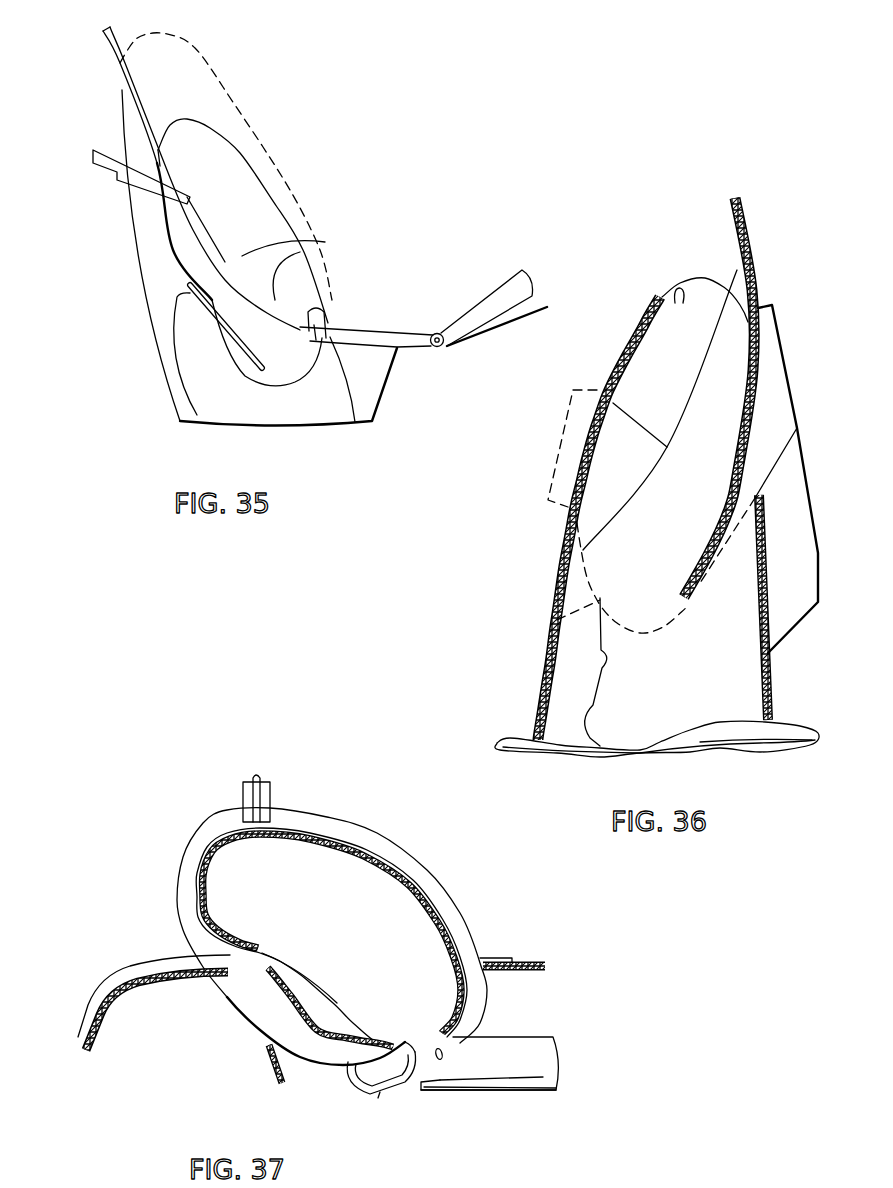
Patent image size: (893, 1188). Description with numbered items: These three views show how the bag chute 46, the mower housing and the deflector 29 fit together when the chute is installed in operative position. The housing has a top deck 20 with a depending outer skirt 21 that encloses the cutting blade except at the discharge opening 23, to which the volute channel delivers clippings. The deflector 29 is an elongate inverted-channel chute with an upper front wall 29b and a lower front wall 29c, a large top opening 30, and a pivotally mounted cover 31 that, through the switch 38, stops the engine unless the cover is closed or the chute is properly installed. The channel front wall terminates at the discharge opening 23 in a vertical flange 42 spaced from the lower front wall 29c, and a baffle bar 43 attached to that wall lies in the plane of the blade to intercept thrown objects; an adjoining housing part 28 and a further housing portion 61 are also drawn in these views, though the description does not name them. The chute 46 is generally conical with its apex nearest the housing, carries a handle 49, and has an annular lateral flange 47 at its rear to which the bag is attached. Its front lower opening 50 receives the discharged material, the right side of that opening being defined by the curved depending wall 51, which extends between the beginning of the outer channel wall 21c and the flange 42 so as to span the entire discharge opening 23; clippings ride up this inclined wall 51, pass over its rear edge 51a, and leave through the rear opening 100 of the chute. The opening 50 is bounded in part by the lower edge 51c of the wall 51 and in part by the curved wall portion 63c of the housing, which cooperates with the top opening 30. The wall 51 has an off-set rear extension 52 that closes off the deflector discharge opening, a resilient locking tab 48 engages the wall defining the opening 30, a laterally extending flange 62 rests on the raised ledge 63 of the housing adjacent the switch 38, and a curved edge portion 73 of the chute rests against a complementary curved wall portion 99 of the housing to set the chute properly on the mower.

In FIG. 37, the top deck 20 is at (548, 1036).
In FIG. 35, the outer skirt 21 is at (112, 60).
In FIG. 37, the outer skirt 21 is at (490, 1092).
In FIG. 35, the outer wall of the channel 21c is at (400, 335).
In FIG. 35, the discharge opening 23 is at (325, 242).
In FIG. 35, the hinge arm 28 is at (503, 322).
In FIG. 37, the hinge arm 28 is at (520, 1078).
In FIG. 35, the deflector 29 is at (158, 368).
In FIG. 36, the deflector 29 is at (820, 550).
In FIG. 37, the deflector 29 is at (142, 959).
In FIG. 37, the upper front wall 29b is at (90, 1010).
In FIG. 35, the lower front wall 29c is at (170, 253).
In FIG. 37, the lower front wall 29c is at (84, 1048).
In FIG. 36, the top opening 30 is at (560, 616).
In FIG. 35, the cover 31 is at (284, 376).
In FIG. 36, the switch 38 is at (569, 443).
In FIG. 35, the vertical outwardly extending flange 42 is at (163, 177).
In FIG. 35, the baffle bar 43 is at (232, 340).
In FIG. 37, the baffle bar 43 is at (270, 1068).
In FIG. 36, the bag chute 46 is at (769, 702).
In FIG. 37, the bag chute 46 is at (389, 833).
In FIG. 36, the annular lateral flange 47 is at (787, 744).
In FIG. 37, the annular lateral flange 47 is at (182, 849).
In FIG. 35, the locking tab 48 is at (316, 363).
In FIG. 37, the locking tab 48 is at (348, 1067).
In FIG. 37, the handle 49 is at (248, 781).
In FIG. 35, the opening 50 is at (262, 225).
In FIG. 36, the opening 50 is at (653, 390).
In FIG. 35, the curved depending wall 51 is at (300, 252).
In FIG. 36, the curved depending wall 51 is at (728, 360).
In FIG. 37, the curved depending wall 51 is at (313, 1000).
In FIG. 36, the rear edge 51a is at (750, 412).
In FIG. 37, the rear edge 51a is at (337, 1003).
In FIG. 36, the lower edge 51c is at (608, 392).
In FIG. 36, the off-set rear extension 52 is at (598, 748).
In FIG. 36, the frame lower portion 61 is at (598, 662).
In FIG. 35, the laterally extending flange 62 is at (277, 165).
In FIG. 36, the laterally extending flange 62 is at (553, 575).
In FIG. 37, the raised ledge portion 63 is at (512, 961).
In FIG. 36, the curved wall portion 63c is at (679, 290).
In FIG. 37, the curved edge portion 73 is at (438, 1048).
In FIG. 37, the curved wall portion 99 is at (398, 1088).
In FIG. 37, the rear opening 100 is at (300, 897).